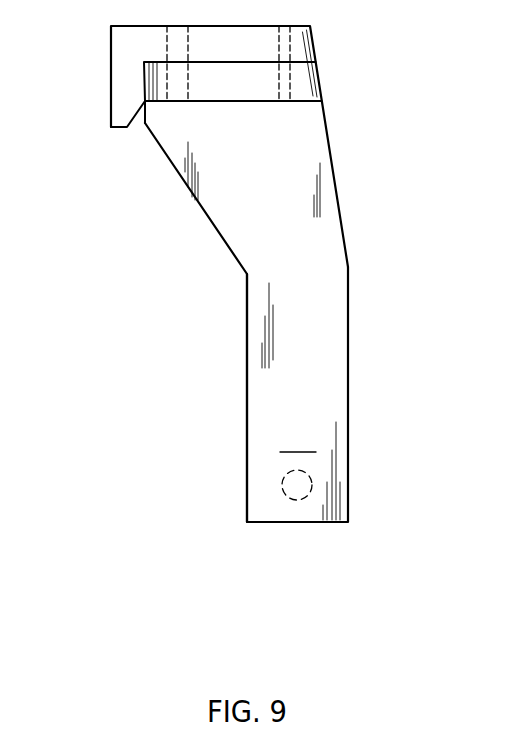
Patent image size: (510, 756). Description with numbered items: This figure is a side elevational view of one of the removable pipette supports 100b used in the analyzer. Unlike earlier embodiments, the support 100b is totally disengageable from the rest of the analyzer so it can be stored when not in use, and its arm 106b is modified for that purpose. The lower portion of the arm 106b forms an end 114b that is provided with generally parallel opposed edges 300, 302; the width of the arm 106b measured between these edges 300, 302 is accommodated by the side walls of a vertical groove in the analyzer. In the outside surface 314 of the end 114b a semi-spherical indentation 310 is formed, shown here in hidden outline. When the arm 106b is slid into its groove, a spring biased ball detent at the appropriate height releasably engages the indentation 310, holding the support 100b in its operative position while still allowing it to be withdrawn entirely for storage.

The pipette support 100b is at (233, 297).
The arm 106b is at (345, 233).
The opposed edge 302 is at (349, 410).
The opposed edge 300 is at (247, 415).
The outside surface 314 is at (273, 422).
The arm end 114b is at (302, 441).
The semi-spherical indentation 310 is at (298, 500).